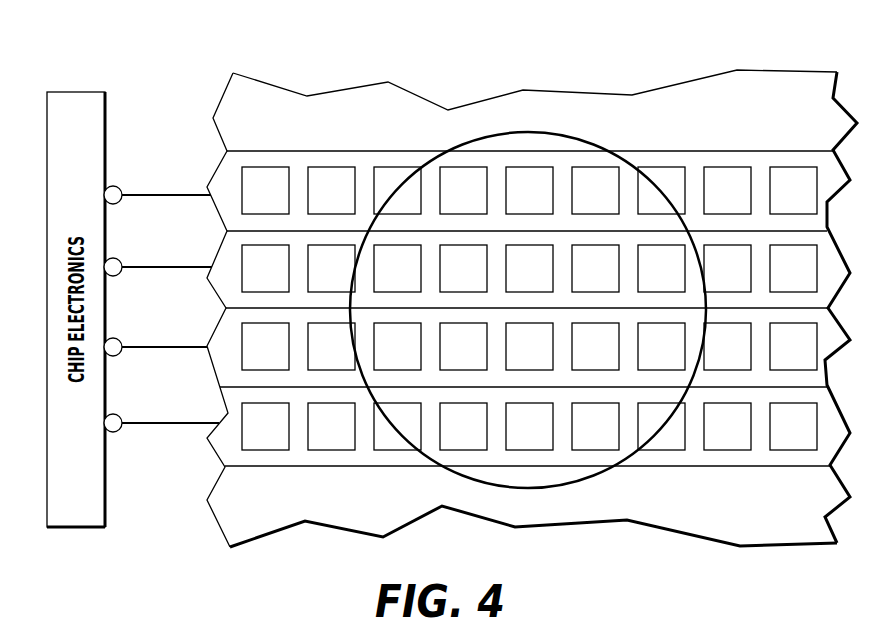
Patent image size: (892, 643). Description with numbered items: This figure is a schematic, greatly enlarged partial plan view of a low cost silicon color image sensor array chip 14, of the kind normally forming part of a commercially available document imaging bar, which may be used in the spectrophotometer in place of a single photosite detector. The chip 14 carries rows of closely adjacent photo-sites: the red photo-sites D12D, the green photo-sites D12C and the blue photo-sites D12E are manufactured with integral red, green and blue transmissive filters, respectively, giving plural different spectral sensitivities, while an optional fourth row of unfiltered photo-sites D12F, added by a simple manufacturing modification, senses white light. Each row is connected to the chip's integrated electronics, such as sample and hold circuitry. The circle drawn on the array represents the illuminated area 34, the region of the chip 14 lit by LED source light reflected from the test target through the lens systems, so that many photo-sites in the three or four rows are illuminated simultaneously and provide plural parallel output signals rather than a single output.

The color image sensor array chip 14 is at (353, 78).
The illuminated area 34 is at (572, 137).
The red photo-sites D12D is at (193, 166).
The green photo-sites D12C is at (193, 239).
The blue photo-sites D12E is at (193, 324).
The unfiltered photo-sites D12F is at (195, 397).